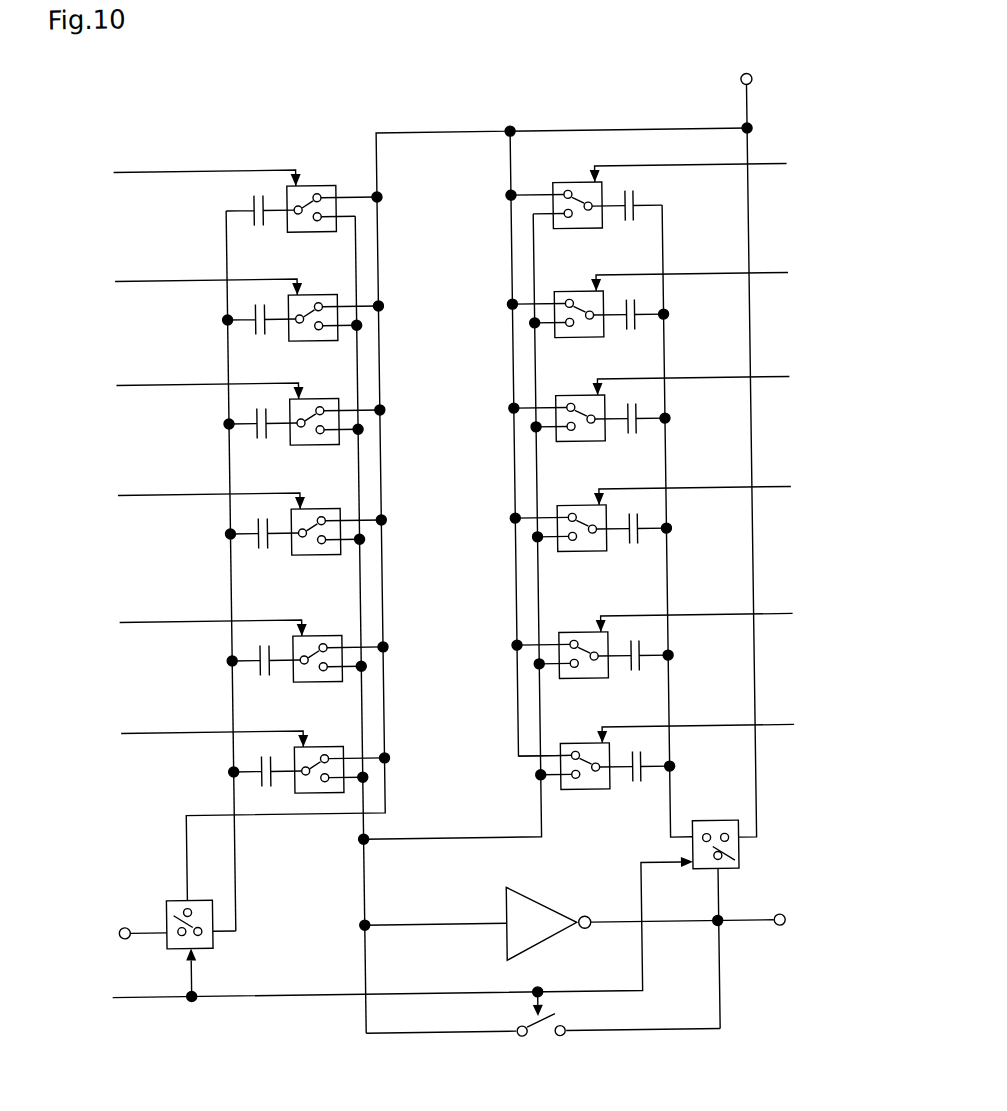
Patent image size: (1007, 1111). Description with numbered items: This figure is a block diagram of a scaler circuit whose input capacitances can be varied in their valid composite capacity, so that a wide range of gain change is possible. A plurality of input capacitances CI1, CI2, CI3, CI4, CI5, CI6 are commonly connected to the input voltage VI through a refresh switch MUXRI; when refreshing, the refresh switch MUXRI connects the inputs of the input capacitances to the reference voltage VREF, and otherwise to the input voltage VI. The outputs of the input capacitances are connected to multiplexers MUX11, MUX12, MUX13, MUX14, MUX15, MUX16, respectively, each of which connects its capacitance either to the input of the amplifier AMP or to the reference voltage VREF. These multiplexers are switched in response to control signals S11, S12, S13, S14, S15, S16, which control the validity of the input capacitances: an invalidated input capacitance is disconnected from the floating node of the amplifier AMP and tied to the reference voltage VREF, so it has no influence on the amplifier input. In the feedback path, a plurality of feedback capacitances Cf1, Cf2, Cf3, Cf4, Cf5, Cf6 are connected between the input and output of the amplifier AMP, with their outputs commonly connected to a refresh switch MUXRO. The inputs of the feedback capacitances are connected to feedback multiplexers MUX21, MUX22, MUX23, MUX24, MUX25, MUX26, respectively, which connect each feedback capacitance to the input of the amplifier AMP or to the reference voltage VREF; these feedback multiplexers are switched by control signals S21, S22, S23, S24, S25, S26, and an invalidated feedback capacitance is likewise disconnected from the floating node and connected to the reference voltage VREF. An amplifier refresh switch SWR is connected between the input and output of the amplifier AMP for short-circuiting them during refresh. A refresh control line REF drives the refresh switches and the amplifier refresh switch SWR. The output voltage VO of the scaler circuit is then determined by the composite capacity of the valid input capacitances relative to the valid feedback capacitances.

The control signal S11 is at (171, 167).
The control signal S12 is at (167, 271).
The control signal S13 is at (168, 372).
The control signal S14 is at (171, 498).
The control signal S15 is at (172, 629).
The control signal S16 is at (172, 735).
The input capacitance CI1 is at (254, 195).
The input capacitance CI2 is at (254, 304).
The input capacitance CI3 is at (254, 408).
The input capacitance CI4 is at (254, 518).
The input capacitance CI5 is at (254, 645).
The input capacitance CI6 is at (254, 756).
The multiplexer MUX11 is at (329, 186).
The multiplexer MUX12 is at (329, 295).
The multiplexer MUX13 is at (329, 399).
The multiplexer MUX14 is at (329, 509).
The multiplexer MUX15 is at (329, 636).
The multiplexer MUX16 is at (329, 747).
The feedback multiplexer MUX21 is at (578, 164).
The feedback multiplexer MUX22 is at (578, 273).
The feedback multiplexer MUX23 is at (578, 377).
The feedback multiplexer MUX24 is at (556, 509).
The feedback multiplexer MUX25 is at (556, 636).
The feedback multiplexer MUX26 is at (556, 747).
The feedback capacitance Cf1 is at (633, 195).
The feedback capacitance Cf2 is at (633, 304).
The feedback capacitance Cf3 is at (633, 408).
The feedback capacitance Cf4 is at (633, 518).
The feedback capacitance Cf5 is at (633, 645).
The feedback capacitance Cf6 is at (633, 756).
The control signal S21 is at (706, 162).
The control signal S22 is at (714, 266).
The control signal S23 is at (714, 369).
The control signal S24 is at (728, 491).
The control signal S25 is at (730, 621).
The control signal S26 is at (731, 726).
The refresh switch MUXRI is at (164, 898).
The refresh switch MUXRO is at (713, 826).
The input voltage VI is at (115, 931).
The output voltage VO is at (782, 924).
The reference control signal REF is at (367, 933).
The amplifier AMP is at (496, 903).
The amplifier refresh switch SWR is at (543, 1032).
The reference voltage VREF is at (742, 439).